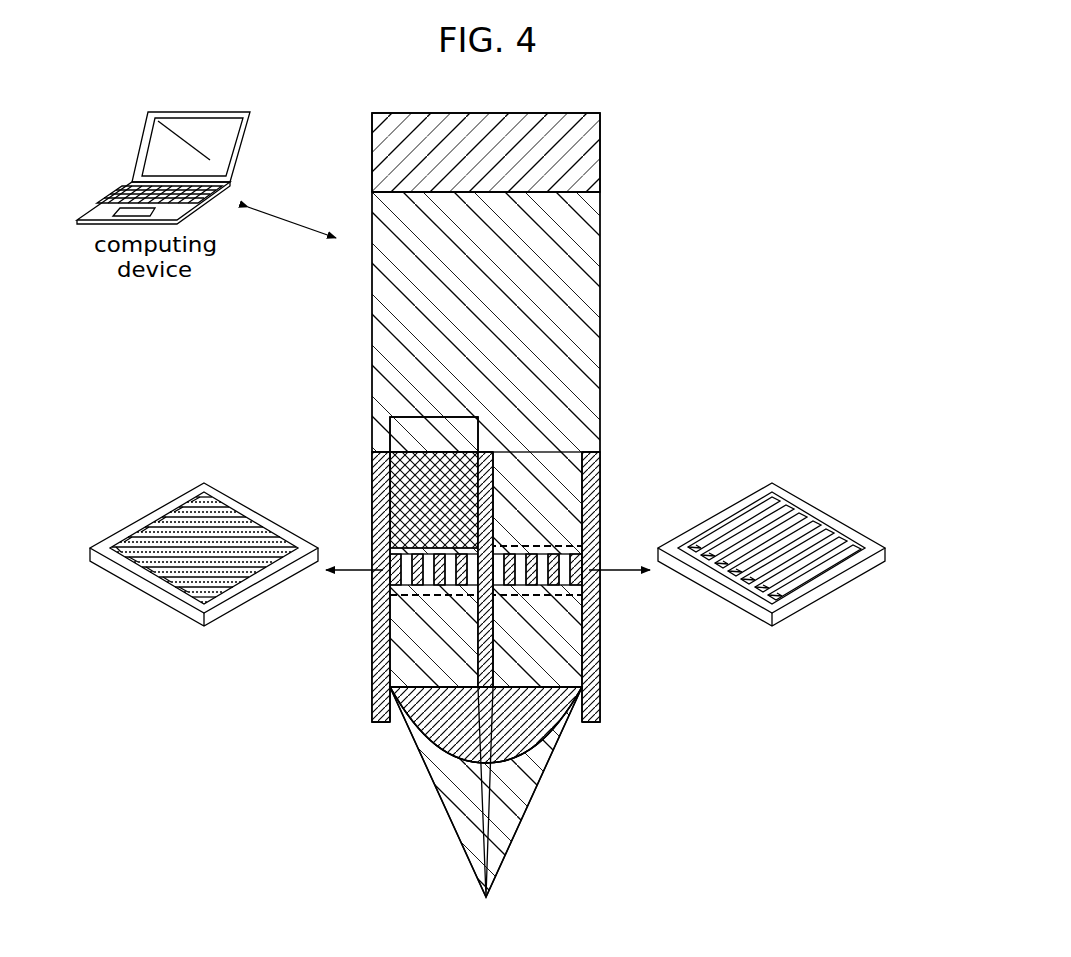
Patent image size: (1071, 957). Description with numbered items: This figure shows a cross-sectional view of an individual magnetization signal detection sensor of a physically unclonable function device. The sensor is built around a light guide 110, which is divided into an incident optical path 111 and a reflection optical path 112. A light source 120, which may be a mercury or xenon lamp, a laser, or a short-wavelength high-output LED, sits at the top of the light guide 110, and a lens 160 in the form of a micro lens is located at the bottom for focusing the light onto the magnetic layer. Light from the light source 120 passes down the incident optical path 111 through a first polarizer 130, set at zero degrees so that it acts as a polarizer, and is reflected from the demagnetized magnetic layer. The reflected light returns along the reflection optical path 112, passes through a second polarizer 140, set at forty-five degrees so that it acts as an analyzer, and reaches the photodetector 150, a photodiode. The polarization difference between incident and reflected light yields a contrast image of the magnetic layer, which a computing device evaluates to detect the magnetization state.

The light guide 110 is at (555, 357).
The incident optical path 111 is at (555, 510).
The reflection optical path 112 is at (423, 663).
The light source 120 is at (577, 151).
The first polarizer 130 is at (797, 500).
The second polarizer 140 is at (176, 507).
The photodetector 150 is at (430, 427).
The lens 160 is at (525, 733).